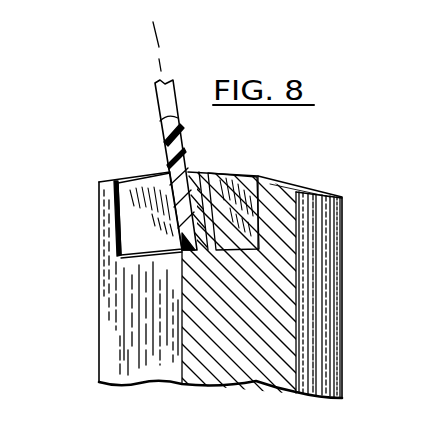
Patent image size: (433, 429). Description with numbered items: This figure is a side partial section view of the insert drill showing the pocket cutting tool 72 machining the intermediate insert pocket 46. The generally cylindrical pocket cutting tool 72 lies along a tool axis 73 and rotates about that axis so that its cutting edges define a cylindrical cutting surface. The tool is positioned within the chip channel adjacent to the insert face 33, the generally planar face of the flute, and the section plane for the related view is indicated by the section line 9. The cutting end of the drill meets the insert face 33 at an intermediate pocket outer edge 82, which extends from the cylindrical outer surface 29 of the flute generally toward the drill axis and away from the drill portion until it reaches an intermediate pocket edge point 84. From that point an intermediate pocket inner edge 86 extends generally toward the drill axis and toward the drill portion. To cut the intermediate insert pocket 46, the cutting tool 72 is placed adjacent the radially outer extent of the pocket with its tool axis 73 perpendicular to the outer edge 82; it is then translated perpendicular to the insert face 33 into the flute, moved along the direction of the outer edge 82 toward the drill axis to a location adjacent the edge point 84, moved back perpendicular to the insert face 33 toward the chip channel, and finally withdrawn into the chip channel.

The section line 9- 9 is at (373, 165).
The cylindrical outer surface 29 is at (97, 305).
The insert face 33 is at (118, 330).
The intermediate insert pocket 46 is at (128, 190).
The pocket cutting tool 72 is at (165, 95).
The tool axis 73 is at (158, 42).
The intermediate pocket outer edge 82 is at (114, 183).
The intermediate pocket edge point 84 is at (192, 173).
The intermediate pocket inner edge 86 is at (196, 171).